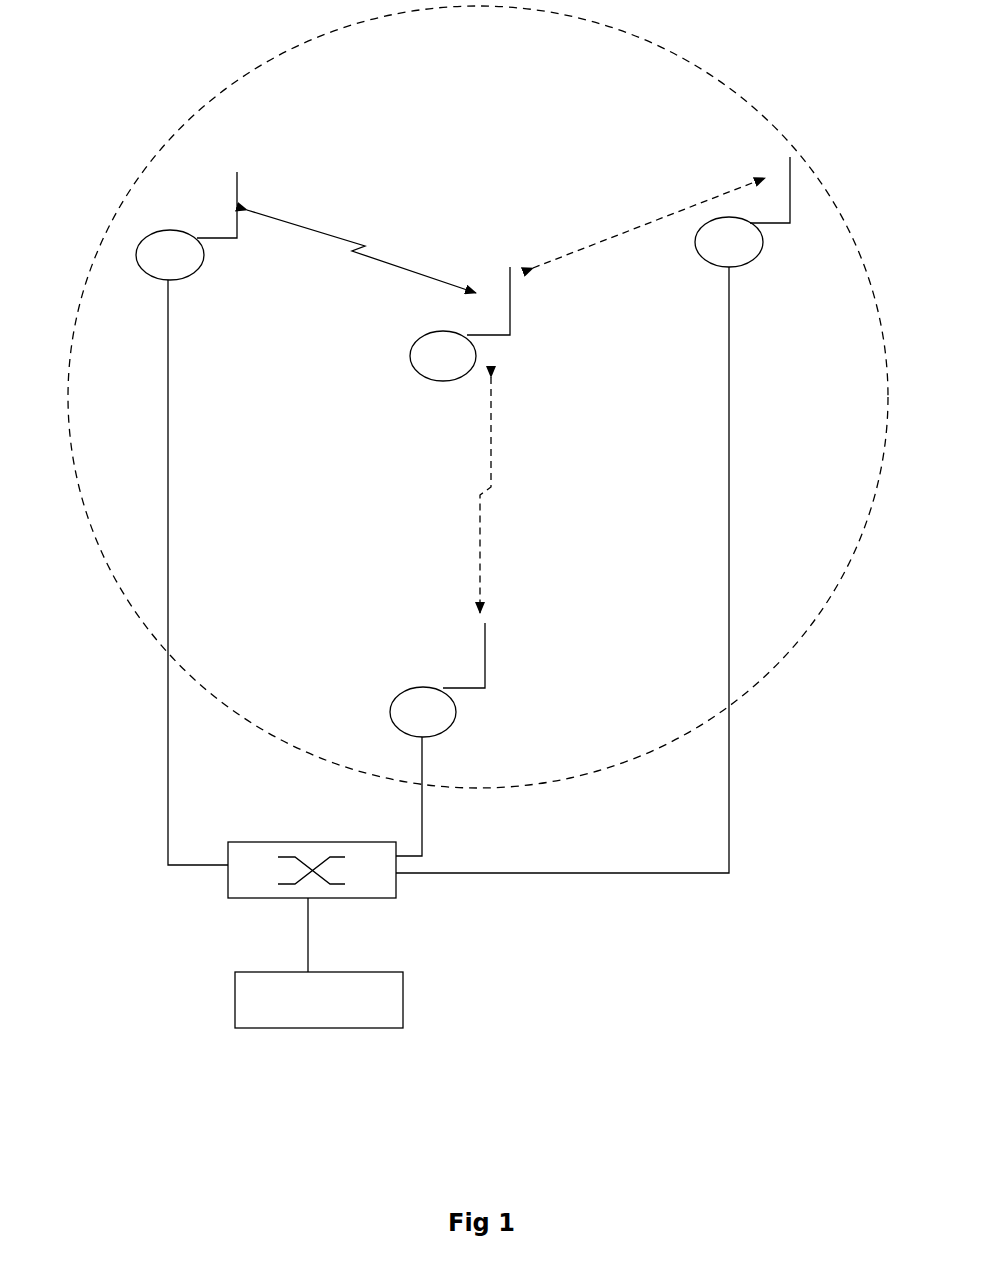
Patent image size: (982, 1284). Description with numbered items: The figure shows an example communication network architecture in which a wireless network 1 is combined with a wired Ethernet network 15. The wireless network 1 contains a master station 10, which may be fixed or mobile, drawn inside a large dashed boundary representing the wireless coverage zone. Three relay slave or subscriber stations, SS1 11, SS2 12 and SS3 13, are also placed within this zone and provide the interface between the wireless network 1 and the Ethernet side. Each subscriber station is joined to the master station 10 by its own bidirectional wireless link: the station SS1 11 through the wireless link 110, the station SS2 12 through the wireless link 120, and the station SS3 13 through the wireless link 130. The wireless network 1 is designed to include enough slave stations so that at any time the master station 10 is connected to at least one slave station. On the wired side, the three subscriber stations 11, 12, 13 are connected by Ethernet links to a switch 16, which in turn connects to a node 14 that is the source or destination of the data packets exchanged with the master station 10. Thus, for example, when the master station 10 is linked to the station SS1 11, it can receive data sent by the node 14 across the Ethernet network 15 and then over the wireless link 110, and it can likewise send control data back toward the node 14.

The wireless network 1 is at (218, 120).
The master station 10 is at (412, 350).
The subscriber station SS1 11 is at (148, 248).
The subscriber station SS2 12 is at (727, 258).
The subscriber station SS3 13 is at (400, 705).
The node 14 is at (238, 977).
The wired Ethernet network 15 is at (124, 796).
The switch 16 is at (240, 878).
The bidirectional wireless link 110 is at (340, 212).
The bidirectional wireless link 120 is at (652, 226).
The bidirectional wireless link 130 is at (485, 470).